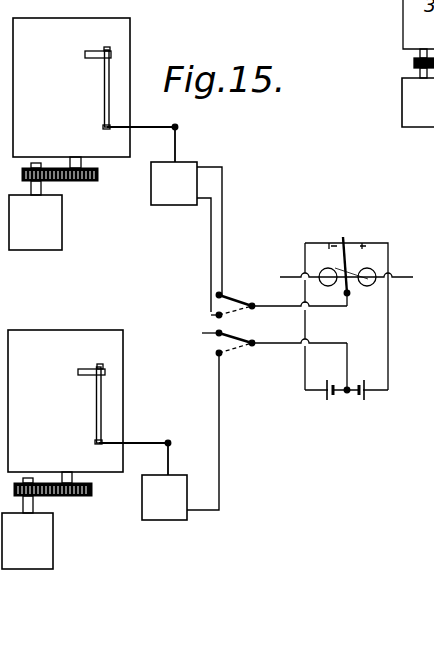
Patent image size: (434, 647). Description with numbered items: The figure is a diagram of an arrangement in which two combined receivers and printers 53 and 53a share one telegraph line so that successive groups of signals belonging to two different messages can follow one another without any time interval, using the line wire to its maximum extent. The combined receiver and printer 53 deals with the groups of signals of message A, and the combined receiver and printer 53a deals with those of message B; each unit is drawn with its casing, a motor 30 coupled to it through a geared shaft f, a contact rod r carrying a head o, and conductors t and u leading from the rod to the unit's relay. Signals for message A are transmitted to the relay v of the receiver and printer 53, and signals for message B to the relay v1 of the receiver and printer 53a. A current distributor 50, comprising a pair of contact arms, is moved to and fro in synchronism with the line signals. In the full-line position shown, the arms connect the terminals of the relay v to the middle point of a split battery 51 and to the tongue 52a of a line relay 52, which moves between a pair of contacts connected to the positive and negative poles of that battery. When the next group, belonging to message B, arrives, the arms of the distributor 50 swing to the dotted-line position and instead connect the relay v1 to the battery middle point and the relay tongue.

The combined receiver and printer 53 is at (71, 87).
The combined receiver and printer 53a is at (65, 401).
The motor 30 is at (218, 323).
The current distributor 50 is at (281, 324).
The split battery 51 is at (346, 400).
The line relay 52 is at (346, 313).
The tongue 52a is at (343, 237).
The contact head o is at (85, 52).
The contact rod r is at (107, 95).
The conductor t is at (152, 129).
The conductor u is at (175, 143).
The relay v is at (175, 183).
The relay v1 is at (170, 498).
The gear shaft f is at (83, 177).